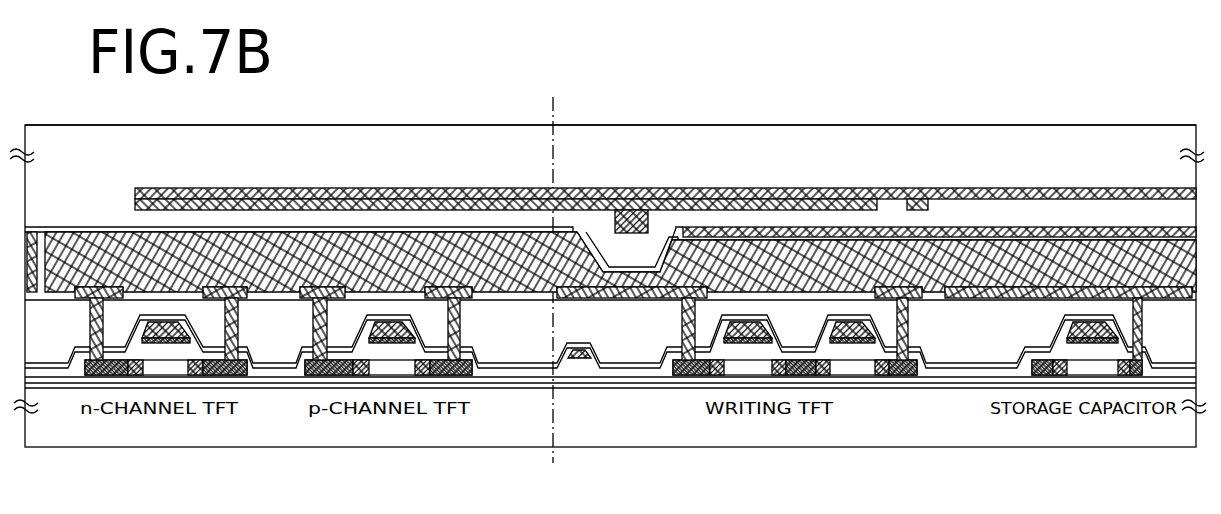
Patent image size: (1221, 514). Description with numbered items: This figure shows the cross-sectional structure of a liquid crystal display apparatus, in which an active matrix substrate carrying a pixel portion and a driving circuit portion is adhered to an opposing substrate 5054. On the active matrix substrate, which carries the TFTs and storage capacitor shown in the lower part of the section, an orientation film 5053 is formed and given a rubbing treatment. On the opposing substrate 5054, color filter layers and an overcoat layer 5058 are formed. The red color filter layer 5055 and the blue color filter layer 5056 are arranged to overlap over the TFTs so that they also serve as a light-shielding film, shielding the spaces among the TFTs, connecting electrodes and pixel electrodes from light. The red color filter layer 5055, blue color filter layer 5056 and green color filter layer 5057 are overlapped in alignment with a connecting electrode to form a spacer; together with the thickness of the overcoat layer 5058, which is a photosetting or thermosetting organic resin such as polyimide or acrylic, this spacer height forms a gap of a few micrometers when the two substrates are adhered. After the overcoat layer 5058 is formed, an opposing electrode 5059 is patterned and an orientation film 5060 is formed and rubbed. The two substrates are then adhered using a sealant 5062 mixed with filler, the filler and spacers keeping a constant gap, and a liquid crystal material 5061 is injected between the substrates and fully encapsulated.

The orientation film 5053 is at (336, 280).
The opposing substrate 5054 is at (418, 167).
The red color filter layer 5055 is at (590, 195).
The blue color filter layer 5056 is at (935, 195).
The green color filter layer 5057 is at (638, 222).
The overcoat layer 5058 is at (482, 217).
The opposing electrode 5059 is at (983, 227).
The orientation film 5060 is at (1073, 233).
The liquid crystal material 5061 is at (227, 255).
The sealant 5062 is at (42, 272).